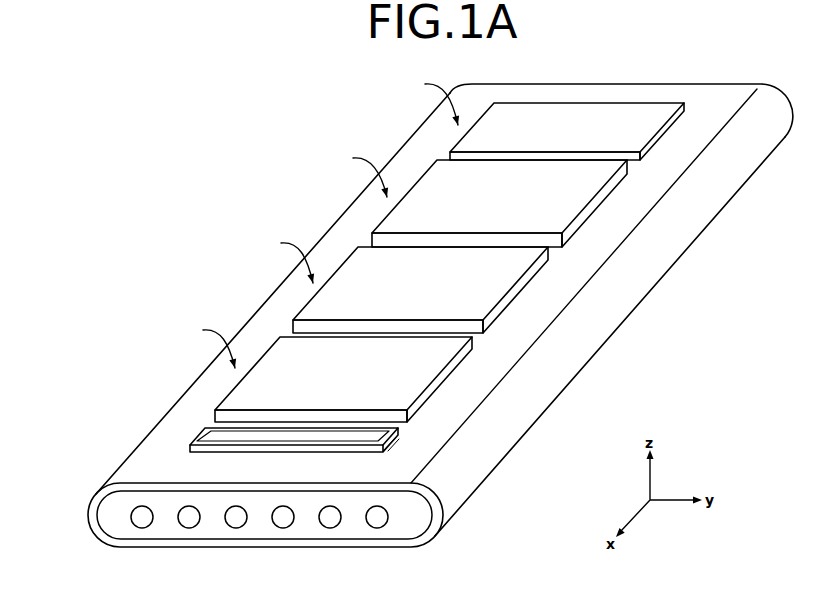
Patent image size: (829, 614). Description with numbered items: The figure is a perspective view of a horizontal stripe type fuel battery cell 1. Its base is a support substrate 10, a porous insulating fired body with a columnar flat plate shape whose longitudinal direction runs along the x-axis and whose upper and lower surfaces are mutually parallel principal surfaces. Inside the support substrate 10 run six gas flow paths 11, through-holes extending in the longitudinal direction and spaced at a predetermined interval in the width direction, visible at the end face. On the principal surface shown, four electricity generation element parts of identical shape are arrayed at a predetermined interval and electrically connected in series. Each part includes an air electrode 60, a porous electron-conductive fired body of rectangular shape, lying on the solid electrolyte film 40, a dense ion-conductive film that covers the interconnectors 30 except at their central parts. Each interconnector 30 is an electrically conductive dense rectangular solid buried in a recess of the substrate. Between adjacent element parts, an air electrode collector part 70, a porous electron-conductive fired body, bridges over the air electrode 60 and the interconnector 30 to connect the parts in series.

The fuel battery cell 1 is at (276, 160).
The support substrate 10 is at (407, 516).
The gas flow paths 11 is at (330, 519).
The interconnector 30 is at (386, 436).
The solid electrolyte film 40 is at (422, 499).
The air electrode 60 is at (659, 124).
The air electrode collector part 70 is at (593, 195).